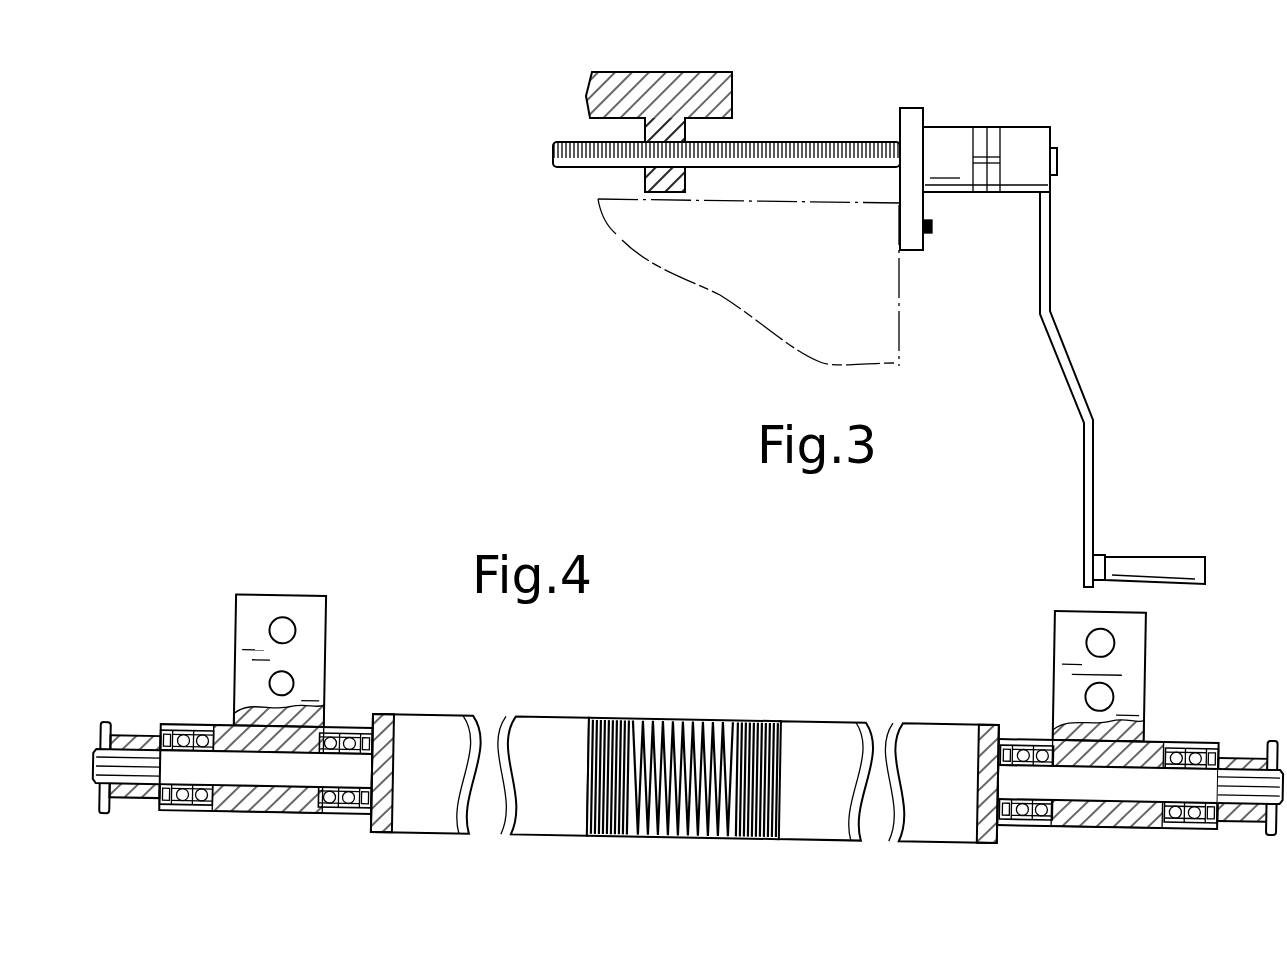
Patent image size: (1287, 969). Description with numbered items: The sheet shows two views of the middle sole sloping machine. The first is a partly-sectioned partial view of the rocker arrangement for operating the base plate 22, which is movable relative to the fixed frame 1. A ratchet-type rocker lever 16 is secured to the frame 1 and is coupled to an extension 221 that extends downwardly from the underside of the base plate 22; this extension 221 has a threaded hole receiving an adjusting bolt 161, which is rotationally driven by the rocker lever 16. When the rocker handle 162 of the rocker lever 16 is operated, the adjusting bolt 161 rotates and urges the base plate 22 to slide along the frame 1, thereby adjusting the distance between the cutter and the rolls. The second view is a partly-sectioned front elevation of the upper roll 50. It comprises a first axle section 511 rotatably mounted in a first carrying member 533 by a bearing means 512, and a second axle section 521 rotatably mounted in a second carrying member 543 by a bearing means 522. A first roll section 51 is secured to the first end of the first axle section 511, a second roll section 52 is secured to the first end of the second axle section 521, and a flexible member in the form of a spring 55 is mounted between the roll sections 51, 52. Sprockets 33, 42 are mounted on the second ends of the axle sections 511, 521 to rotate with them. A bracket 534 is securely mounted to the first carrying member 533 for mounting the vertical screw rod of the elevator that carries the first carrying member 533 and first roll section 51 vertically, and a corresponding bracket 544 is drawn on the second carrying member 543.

In FIG. 3, the fixed frame 1 is at (765, 300).
In FIG. 3, the rocker lever 16 is at (1068, 220).
In FIG. 3, the adjusting bolt 161 is at (806, 168).
In FIG. 3, the rocker handle 162 is at (1170, 566).
In FIG. 3, the base plate 22 is at (682, 85).
In FIG. 3, the extension 221 is at (684, 140).
In FIG. 4, the sprocket 33 is at (135, 797).
In FIG. 4, the sprocket 42 is at (1240, 796).
In FIG. 4, the upper roll 50 is at (699, 662).
In FIG. 4, the first roll section 51 is at (558, 730).
In FIG. 4, the second roll section 52 is at (960, 723).
In FIG. 4, the spring 55 is at (697, 827).
In FIG. 4, the first axle section 511 is at (168, 765).
In FIG. 4, the bearing means 512 is at (202, 738).
In FIG. 4, the second axle section 521 is at (1113, 785).
In FIG. 4, the bearing means 522 is at (1028, 806).
In FIG. 4, the first carrying member 533 is at (223, 806).
In FIG. 4, the bracket 534 is at (313, 636).
In FIG. 4, the second carrying member 543 is at (1157, 731).
In FIG. 4, the support plate 544 is at (1133, 660).